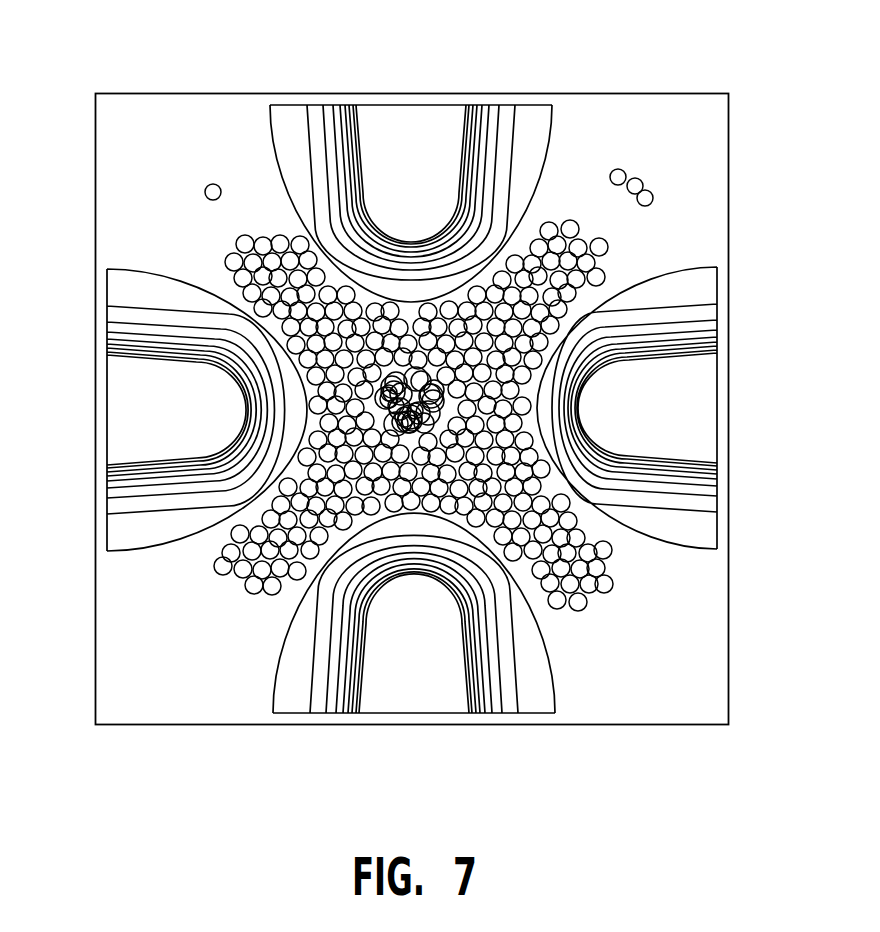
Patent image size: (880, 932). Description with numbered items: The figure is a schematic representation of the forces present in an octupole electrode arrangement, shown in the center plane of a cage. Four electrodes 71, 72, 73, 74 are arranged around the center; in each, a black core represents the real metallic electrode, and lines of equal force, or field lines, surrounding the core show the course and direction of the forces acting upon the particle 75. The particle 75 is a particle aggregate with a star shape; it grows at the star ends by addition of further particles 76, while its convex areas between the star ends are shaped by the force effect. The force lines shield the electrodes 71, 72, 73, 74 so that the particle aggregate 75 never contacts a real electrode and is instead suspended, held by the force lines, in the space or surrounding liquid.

The electrode 71 is at (411, 105).
The electrode 72 is at (717, 403).
The electrode 73 is at (412, 713).
The electrode 74 is at (107, 428).
The particle 75 is at (262, 558).
The further particles 76 is at (236, 229).